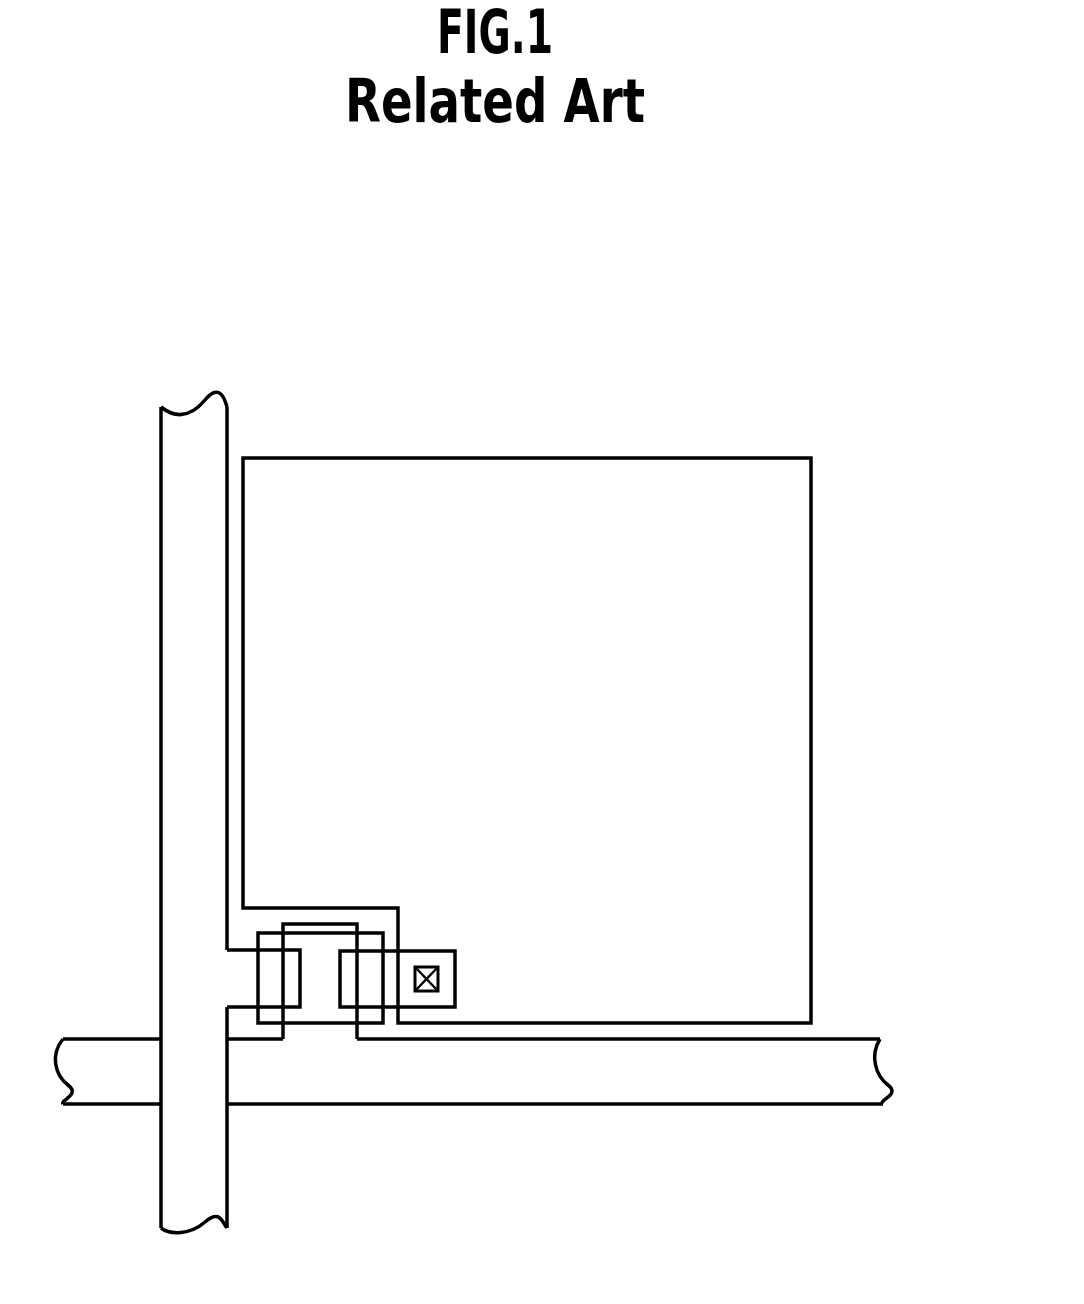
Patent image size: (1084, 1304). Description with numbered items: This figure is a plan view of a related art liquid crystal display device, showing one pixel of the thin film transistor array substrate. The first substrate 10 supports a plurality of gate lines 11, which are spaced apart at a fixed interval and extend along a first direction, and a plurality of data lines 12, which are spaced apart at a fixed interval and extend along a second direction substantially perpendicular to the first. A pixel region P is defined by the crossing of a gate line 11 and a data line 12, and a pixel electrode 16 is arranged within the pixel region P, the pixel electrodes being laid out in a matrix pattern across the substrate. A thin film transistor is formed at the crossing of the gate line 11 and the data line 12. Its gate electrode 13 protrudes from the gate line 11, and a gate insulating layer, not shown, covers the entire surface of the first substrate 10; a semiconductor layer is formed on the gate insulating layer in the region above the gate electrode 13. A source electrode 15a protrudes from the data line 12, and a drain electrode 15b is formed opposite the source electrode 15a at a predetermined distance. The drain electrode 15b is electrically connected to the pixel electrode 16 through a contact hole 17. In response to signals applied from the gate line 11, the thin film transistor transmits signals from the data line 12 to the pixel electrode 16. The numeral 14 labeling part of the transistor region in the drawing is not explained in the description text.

The first substrate 10 is at (848, 464).
The pixel region P is at (823, 587).
The gate line 11 is at (703, 1092).
The data line 12 is at (173, 743).
The gate electrode 13 is at (333, 928).
The gate electrode 14 is at (321, 1012).
The source electrode 15a is at (241, 963).
The drain electrode 15b is at (437, 953).
The pixel electrode 16 is at (797, 742).
The contact hole 17 is at (432, 993).